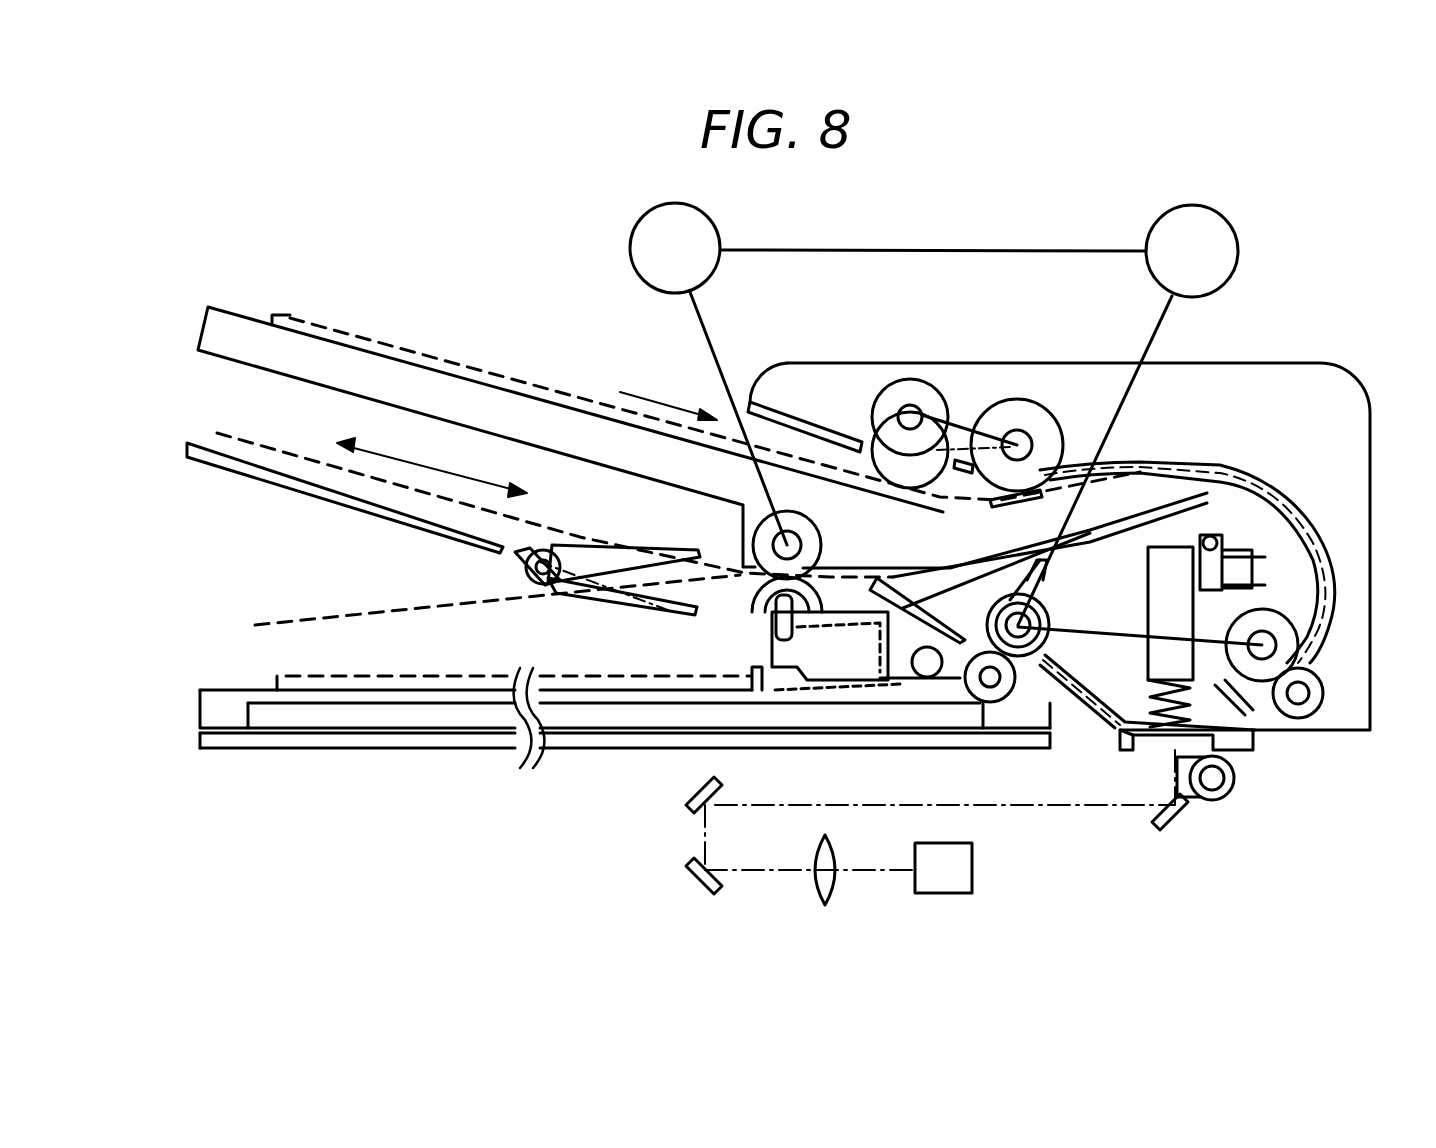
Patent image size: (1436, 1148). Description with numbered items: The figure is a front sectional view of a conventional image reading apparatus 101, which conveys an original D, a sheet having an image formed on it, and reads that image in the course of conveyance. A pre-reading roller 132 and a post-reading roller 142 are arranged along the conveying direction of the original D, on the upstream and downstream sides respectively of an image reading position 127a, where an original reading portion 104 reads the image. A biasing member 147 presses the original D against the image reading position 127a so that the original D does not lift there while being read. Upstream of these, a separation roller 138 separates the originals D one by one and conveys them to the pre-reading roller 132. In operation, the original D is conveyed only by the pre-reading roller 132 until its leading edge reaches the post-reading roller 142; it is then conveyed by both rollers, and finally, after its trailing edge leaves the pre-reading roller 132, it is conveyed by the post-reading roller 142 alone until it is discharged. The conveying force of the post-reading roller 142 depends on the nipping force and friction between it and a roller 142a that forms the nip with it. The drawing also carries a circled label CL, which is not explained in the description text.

The image reading apparatus 101 is at (1283, 350).
The original reading portion 104 is at (1205, 836).
The image reading position 127a is at (1170, 745).
The pre-reading roller 132 is at (1262, 682).
The separation roller 138 is at (1017, 400).
The post-reading roller 142 is at (1000, 600).
The roller 142a is at (990, 702).
The biasing member 147 is at (1130, 718).
The original D is at (512, 380).
The cleaning unit CL is at (1128, 415).